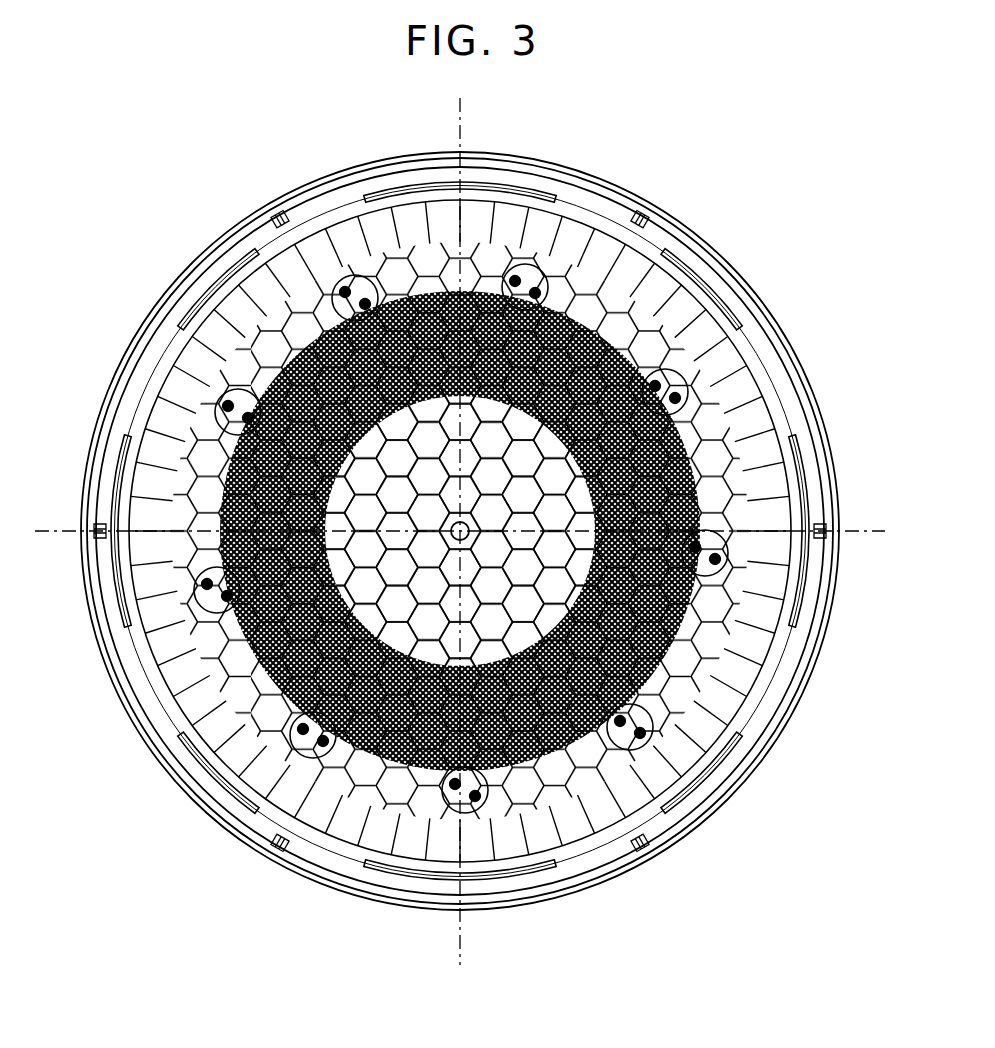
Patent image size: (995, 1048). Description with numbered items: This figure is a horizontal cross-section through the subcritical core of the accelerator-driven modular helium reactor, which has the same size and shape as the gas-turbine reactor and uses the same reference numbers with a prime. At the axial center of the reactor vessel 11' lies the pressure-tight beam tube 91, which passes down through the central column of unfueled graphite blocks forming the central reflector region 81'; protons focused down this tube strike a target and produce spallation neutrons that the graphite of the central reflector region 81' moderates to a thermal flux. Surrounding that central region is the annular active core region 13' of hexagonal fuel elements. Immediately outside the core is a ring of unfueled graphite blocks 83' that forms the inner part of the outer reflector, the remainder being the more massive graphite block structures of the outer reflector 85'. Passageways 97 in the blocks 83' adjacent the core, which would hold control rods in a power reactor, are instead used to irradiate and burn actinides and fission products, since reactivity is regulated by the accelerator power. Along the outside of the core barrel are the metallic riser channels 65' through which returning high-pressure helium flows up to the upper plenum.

The reactor vessel 11' is at (460, 530).
The annular active core region 13' is at (403, 580).
The metallic riser channels 65' is at (479, 483).
The central reflector region 81' is at (305, 531).
The ring of unfueled graphite blocks 83' is at (552, 531).
The outer reflector 85' is at (460, 462).
The beam tube 91 is at (468, 527).
The passageways 97 is at (720, 568).